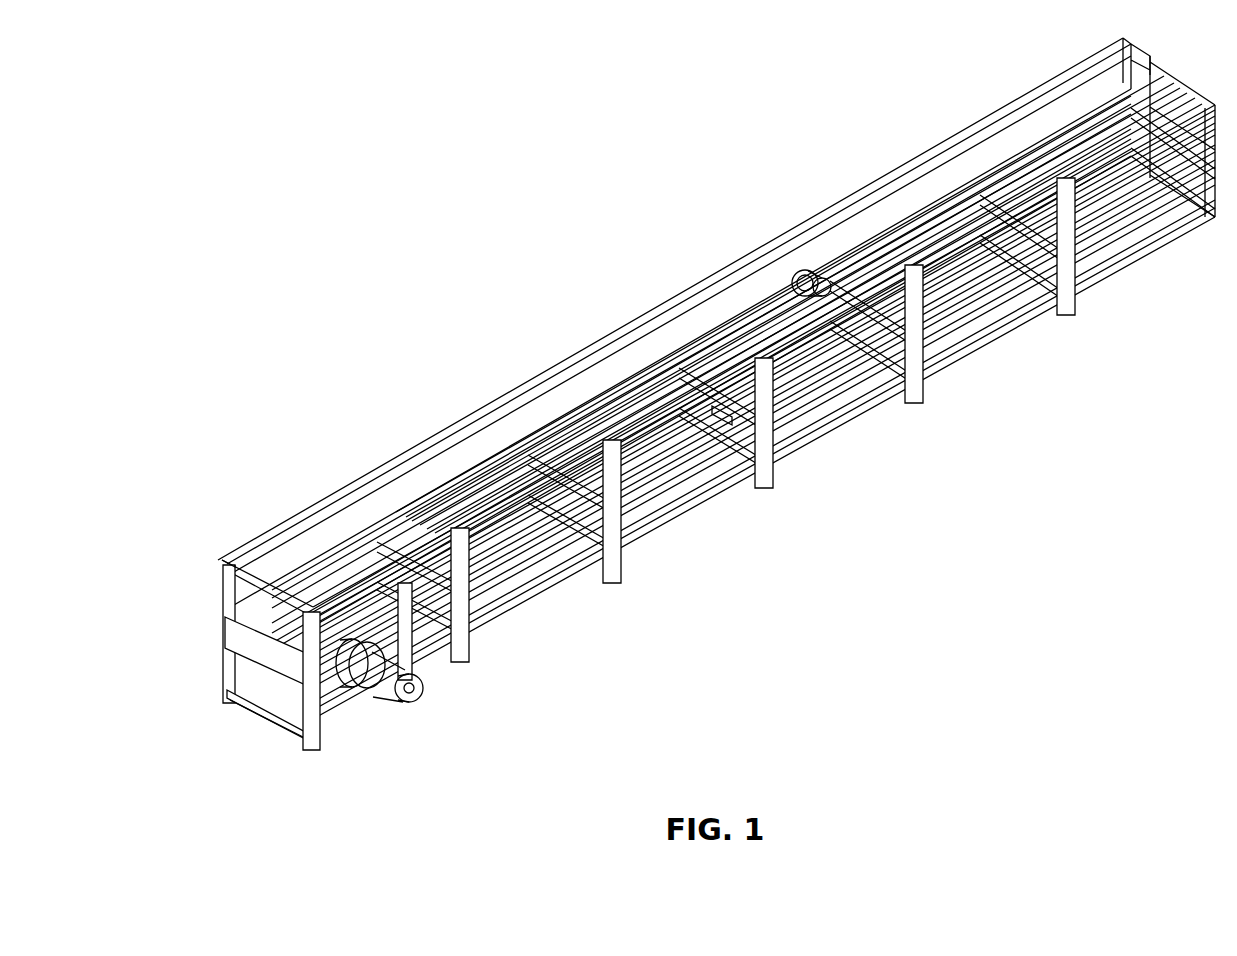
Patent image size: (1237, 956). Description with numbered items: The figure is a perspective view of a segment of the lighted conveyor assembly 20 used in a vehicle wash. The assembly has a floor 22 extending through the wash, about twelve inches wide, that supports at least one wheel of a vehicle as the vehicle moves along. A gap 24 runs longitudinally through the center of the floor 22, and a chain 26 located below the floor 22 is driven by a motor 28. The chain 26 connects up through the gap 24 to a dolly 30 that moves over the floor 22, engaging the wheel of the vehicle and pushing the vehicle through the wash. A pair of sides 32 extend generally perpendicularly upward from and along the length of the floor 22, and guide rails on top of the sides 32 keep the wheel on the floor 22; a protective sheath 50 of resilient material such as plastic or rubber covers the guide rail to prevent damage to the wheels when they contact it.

The lighted conveyor assembly 20 is at (557, 272).
The floor 22 is at (1047, 145).
The gap 24 is at (887, 250).
The chain 26 is at (515, 467).
The motor 28 is at (425, 690).
The dolly 30 is at (797, 272).
The sides 32 is at (220, 582).
The protective sheath 50 is at (722, 412).